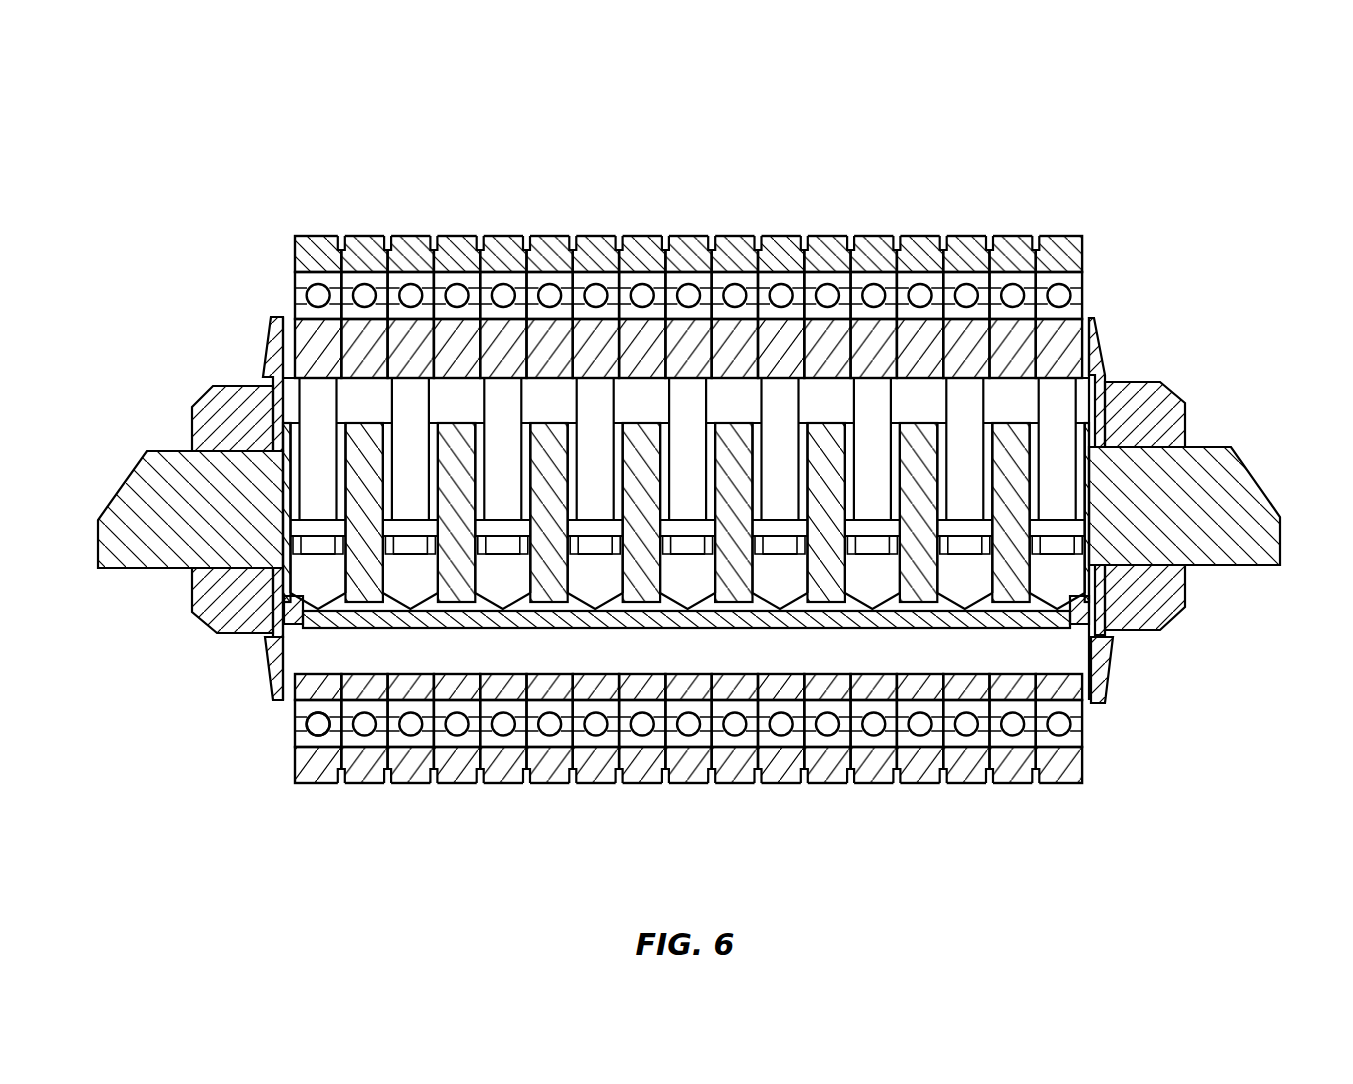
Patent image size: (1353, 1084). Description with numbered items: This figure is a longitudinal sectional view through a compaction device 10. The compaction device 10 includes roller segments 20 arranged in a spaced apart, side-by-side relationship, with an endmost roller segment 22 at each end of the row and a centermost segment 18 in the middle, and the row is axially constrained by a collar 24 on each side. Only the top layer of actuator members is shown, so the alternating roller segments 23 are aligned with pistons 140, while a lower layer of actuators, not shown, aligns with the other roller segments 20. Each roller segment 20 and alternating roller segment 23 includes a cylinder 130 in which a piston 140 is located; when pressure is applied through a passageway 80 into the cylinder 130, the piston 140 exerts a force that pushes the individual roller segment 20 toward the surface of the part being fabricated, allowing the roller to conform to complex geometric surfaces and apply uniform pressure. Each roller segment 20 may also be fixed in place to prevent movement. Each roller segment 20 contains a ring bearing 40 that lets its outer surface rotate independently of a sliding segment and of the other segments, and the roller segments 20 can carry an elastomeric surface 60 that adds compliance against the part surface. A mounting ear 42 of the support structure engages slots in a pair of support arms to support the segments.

The compaction device 10 is at (698, 471).
The centermost segment 18 is at (686, 235).
The roller segments 20 is at (467, 783).
The endmost roller segment 22 is at (320, 236).
The alternating roller segments 23 is at (1053, 235).
The collar 24 is at (207, 392).
The ring bearing 40 is at (315, 724).
The mounting ear 42 is at (135, 476).
The elastomeric surface 60 is at (367, 783).
The passageway 80 is at (265, 640).
The cylinder 130 is at (323, 572).
The piston 140 is at (1053, 400).